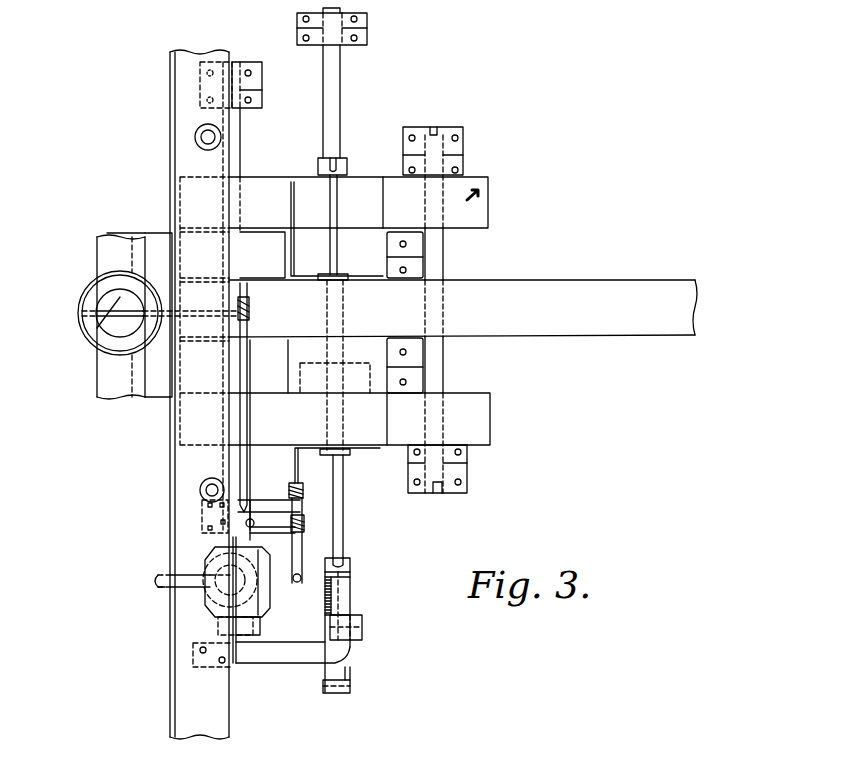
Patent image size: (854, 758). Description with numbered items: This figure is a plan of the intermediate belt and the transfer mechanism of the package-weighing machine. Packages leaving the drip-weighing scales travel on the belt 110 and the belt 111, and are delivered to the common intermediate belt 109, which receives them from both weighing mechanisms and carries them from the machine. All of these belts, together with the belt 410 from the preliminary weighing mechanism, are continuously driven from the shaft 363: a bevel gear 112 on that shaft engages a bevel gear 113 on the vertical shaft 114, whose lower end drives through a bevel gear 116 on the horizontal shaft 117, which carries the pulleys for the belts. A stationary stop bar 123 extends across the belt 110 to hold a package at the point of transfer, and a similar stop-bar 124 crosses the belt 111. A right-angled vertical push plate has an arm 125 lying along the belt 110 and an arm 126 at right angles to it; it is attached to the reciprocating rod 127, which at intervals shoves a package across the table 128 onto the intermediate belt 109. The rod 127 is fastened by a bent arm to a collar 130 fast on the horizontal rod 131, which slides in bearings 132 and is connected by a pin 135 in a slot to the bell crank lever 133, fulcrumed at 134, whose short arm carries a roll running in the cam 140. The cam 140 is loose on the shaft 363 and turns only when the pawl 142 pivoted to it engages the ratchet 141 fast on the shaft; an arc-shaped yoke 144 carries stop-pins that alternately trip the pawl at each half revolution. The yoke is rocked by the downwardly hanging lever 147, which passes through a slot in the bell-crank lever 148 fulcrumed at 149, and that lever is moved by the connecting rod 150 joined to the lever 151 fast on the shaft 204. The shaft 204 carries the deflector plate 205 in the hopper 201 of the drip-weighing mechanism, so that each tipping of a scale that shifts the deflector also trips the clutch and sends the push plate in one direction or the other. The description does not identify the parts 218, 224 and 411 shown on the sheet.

The intermediate belt 109 is at (513, 283).
The belt 110 is at (402, 437).
The belt 111 is at (304, 180).
The bevel gear 112 is at (283, 603).
The bevel gear 113 is at (213, 565).
The vertical shaft 114 is at (210, 583).
The bevel gear 116 is at (222, 627).
The horizontal shaft 117 is at (238, 166).
The stationary stop bar 123 is at (387, 415).
The stop-bar 124 is at (383, 192).
The push plate arm 125 is at (385, 274).
The push plate arm 126 is at (291, 188).
The reciprocating rod 127 is at (332, 208).
The table 128 is at (382, 283).
The collar 130 is at (343, 160).
The horizontal rod 131 is at (339, 597).
The bearings 132 is at (367, 27).
The bell crank lever 133 is at (325, 677).
The fulcrum 134 is at (365, 632).
The pin 135 is at (350, 688).
The cam 140 is at (317, 645).
The ratchet 141 is at (352, 608).
The pawl 142 is at (352, 577).
The arc-shaped yoke 144 is at (351, 535).
The downwardly hanging lever 147 is at (304, 488).
The bell-crank lever 148 is at (270, 513).
The fulcrum 149 is at (307, 513).
The connecting rod 150 is at (247, 408).
The lever 151 is at (237, 308).
The hopper 201 is at (88, 297).
The shaft 204 is at (82, 315).
The deflector plate 205 is at (97, 328).
The bushing 218 is at (207, 490).
The bushing 224 is at (213, 137).
The driving shaft 363 is at (162, 590).
The belt 410 is at (153, 235).
The plate 411 is at (160, 390).